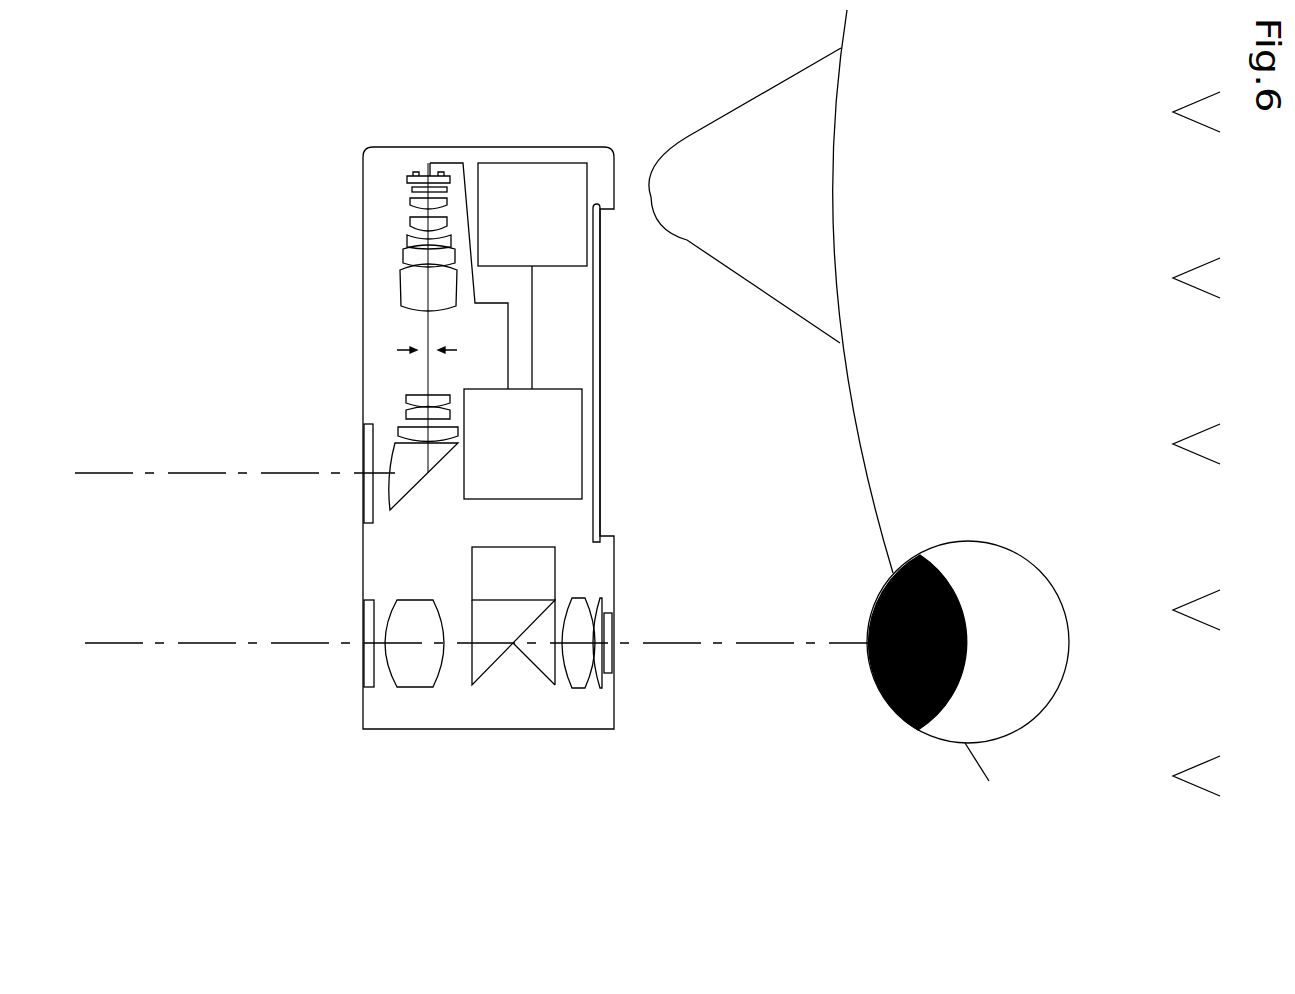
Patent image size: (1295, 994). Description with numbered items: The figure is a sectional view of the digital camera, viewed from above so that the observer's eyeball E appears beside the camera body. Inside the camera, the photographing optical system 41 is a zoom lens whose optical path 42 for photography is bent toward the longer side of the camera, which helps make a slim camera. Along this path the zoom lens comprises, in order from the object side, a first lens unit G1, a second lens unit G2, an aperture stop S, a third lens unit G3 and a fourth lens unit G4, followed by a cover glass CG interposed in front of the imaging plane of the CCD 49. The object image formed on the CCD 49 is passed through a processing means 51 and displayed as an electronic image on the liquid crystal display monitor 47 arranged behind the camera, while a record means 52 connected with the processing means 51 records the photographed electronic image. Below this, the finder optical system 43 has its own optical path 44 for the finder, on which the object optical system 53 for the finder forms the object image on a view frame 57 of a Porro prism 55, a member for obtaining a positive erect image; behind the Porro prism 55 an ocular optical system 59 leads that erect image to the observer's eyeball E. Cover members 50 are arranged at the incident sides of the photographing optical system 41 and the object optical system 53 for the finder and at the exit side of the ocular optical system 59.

The photographing optical system 41 is at (383, 331).
The optical path for photography 42 is at (100, 473).
The finder optical system 43 is at (401, 587).
The optical path for the finder 44 is at (100, 645).
The liquid crystal display monitor 47 is at (583, 452).
The CCD 49 is at (408, 178).
The cover members 50 is at (352, 441).
The processing means 51 is at (512, 499).
The record means 52 is at (533, 170).
The object optical system for the finder 53 is at (415, 688).
The Porro prism 55 is at (543, 680).
The view frame 57 is at (509, 604).
The ocular optical system 59 is at (590, 690).
The cover glass CG is at (413, 190).
The first lens unit G1 is at (386, 458).
The second lens unit G2 is at (402, 393).
The third lens unit G3 is at (393, 235).
The fourth lens unit G4 is at (393, 195).
The aperture stop S is at (458, 350).
The observer's eyeball E is at (858, 708).